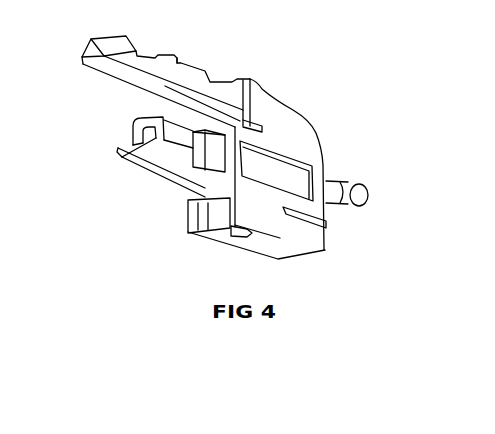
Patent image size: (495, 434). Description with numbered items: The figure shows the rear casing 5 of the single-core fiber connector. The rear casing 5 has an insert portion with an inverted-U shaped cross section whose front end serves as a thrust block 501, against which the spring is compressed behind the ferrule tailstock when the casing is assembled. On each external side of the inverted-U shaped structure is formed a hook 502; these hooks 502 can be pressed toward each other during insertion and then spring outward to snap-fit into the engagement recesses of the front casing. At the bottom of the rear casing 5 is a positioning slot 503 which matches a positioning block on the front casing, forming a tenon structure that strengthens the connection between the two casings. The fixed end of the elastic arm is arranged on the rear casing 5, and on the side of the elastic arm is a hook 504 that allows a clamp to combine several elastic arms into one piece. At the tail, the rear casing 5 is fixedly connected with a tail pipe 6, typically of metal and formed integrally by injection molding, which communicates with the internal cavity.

The rear casing 5 is at (272, 219).
The thrust block 501 is at (130, 132).
The hook 502 is at (192, 163).
The positioning slot 503 is at (204, 233).
The hook 504 is at (222, 78).
The tail pipe 6 is at (363, 187).